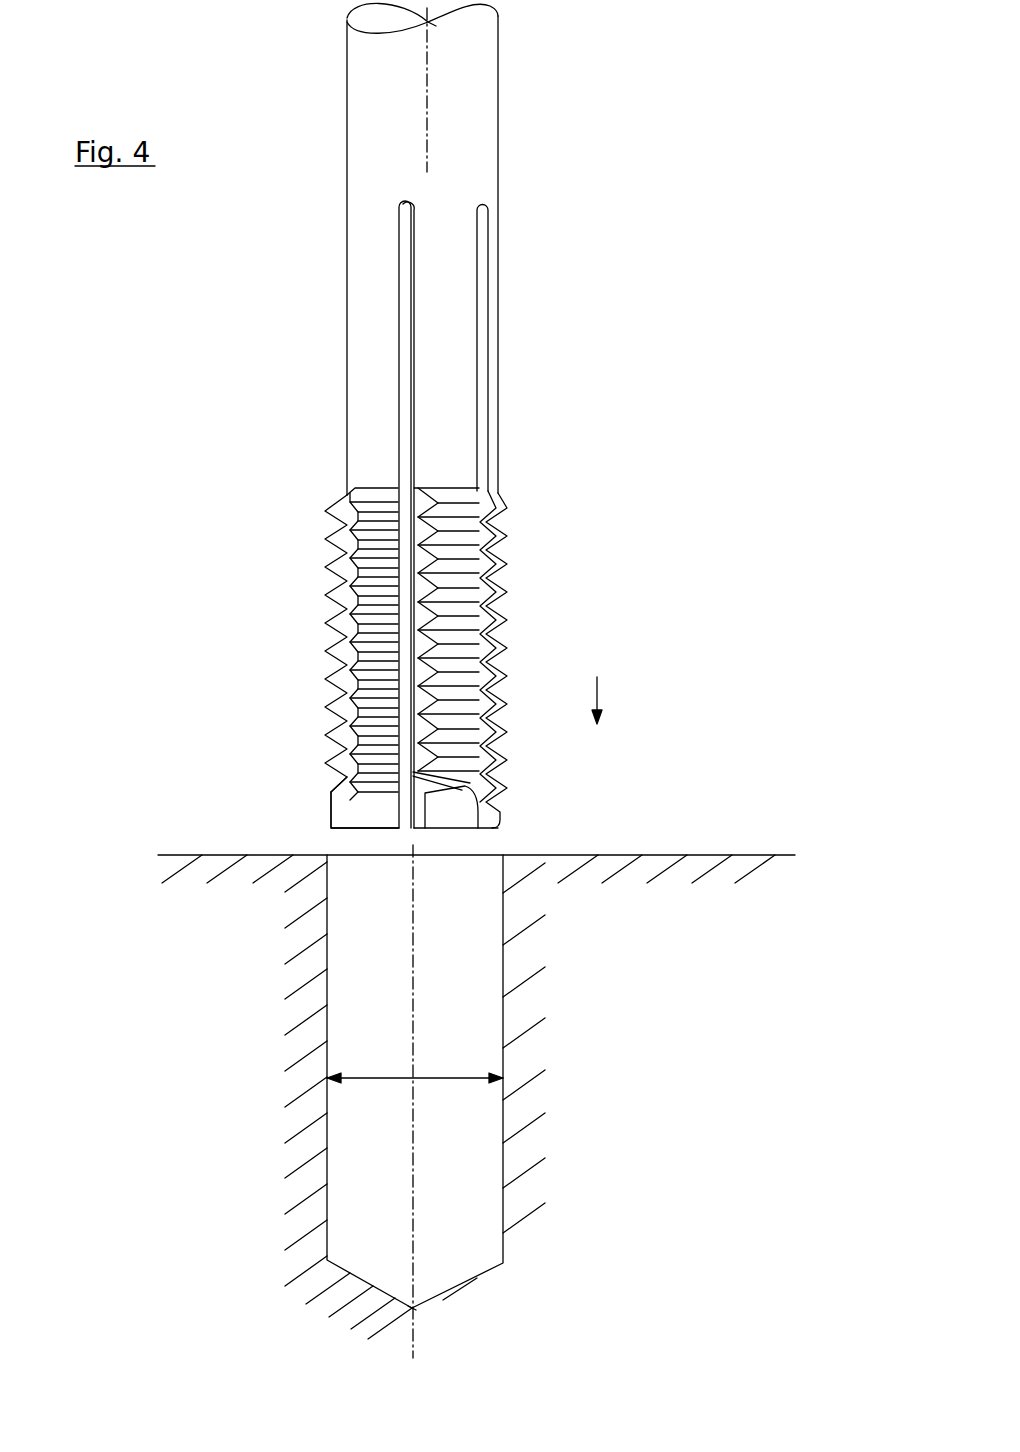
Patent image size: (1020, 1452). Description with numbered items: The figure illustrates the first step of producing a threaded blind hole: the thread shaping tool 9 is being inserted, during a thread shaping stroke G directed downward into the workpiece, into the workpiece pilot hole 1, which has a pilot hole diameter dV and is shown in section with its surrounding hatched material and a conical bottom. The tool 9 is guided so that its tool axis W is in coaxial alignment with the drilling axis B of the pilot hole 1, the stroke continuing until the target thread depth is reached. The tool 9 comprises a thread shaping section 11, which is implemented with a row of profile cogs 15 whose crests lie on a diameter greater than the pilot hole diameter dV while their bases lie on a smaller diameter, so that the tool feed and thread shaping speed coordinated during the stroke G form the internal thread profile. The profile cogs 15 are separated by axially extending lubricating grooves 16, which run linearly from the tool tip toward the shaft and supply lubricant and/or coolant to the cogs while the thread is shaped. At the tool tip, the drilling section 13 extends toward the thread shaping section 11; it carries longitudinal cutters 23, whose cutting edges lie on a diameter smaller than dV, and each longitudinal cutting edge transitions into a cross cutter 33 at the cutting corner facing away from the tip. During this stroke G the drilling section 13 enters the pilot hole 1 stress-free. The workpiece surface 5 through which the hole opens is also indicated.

The workpiece pilot hole 1 is at (473, 1000).
The substrate surface 5 is at (183, 853).
The thread shaping tool 9 is at (280, 398).
The thread shaping section 11 is at (304, 641).
The drilling section 13 is at (173, 634).
The profile cogs 15 is at (325, 597).
The lubricating grooves 16 is at (483, 380).
The longitudinal cutters 23 is at (329, 806).
The cross cutter 33 is at (330, 797).
The tool axis W is at (431, 160).
The thread shaping stroke G is at (615, 700).
The drilling axis B is at (416, 1322).
The pilot hole diameter dV is at (415, 1059).